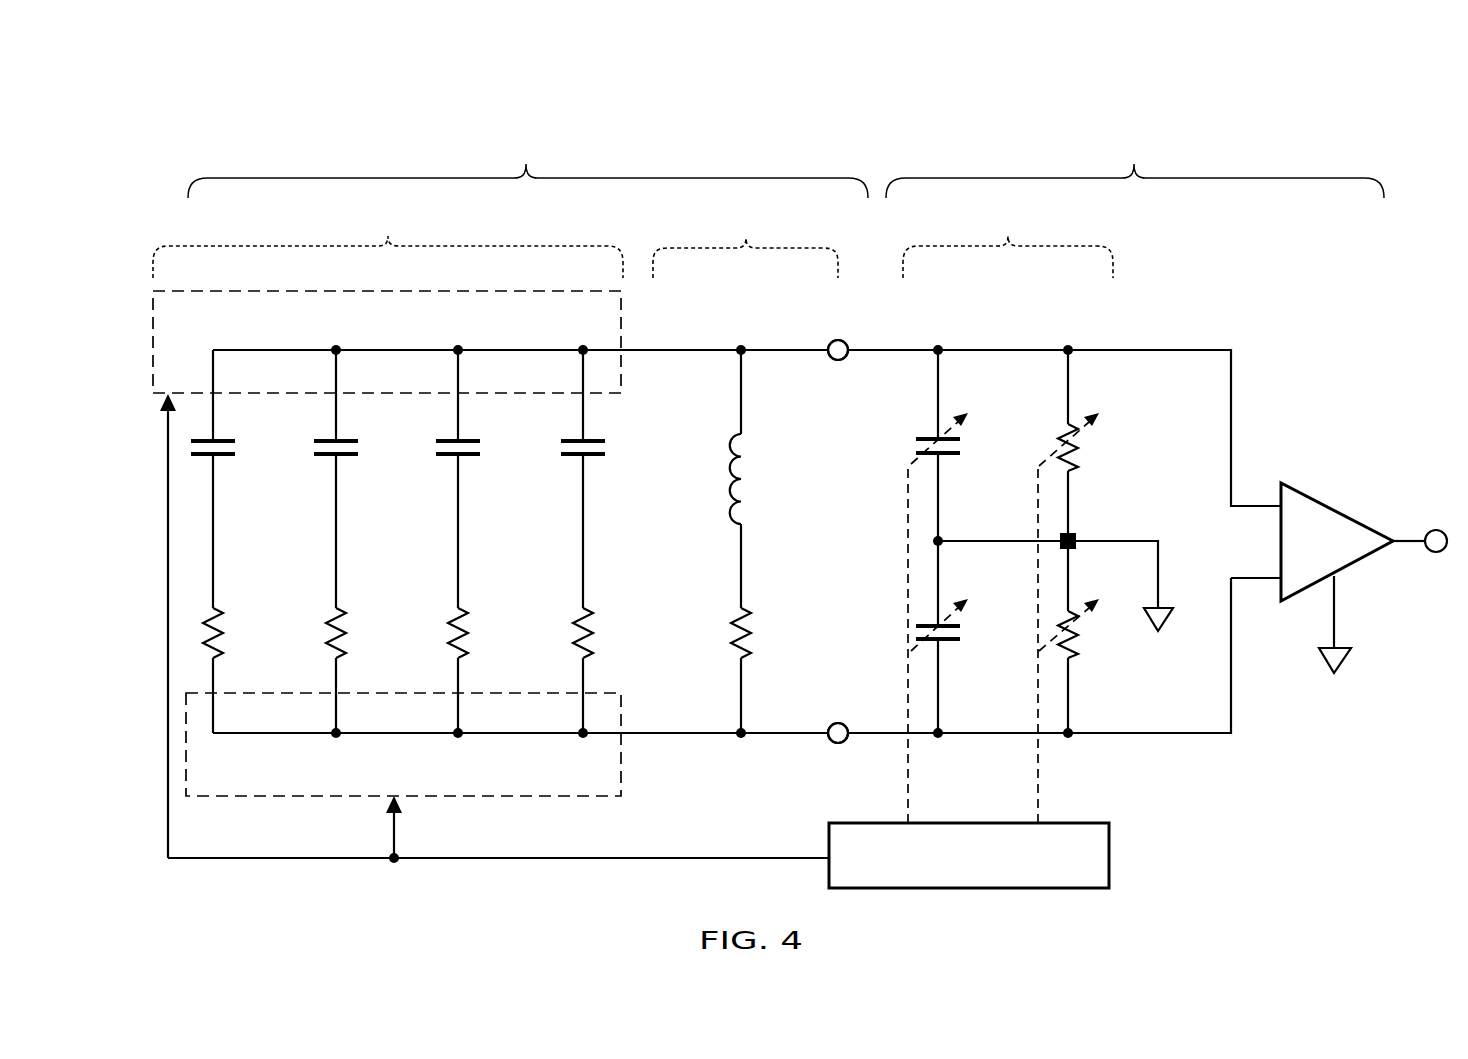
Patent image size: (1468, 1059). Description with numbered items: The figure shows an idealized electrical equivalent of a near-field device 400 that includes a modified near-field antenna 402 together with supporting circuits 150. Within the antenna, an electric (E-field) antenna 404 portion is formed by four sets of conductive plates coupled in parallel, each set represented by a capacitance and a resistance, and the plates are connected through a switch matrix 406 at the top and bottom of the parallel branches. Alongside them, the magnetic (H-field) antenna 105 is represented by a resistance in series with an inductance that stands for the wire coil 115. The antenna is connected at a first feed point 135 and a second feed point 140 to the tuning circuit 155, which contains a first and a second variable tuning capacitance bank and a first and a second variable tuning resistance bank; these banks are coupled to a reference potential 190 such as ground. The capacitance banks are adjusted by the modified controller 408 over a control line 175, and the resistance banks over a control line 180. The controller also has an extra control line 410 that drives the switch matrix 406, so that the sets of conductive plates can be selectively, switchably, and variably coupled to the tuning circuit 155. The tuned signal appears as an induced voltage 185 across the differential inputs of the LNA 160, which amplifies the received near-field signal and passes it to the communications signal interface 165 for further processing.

The near-field device 400 is at (176, 152).
The modified near-field antenna 402 is at (528, 164).
The electric (E-field) antenna 404 is at (388, 242).
The magnetic (H-field) antenna 105 is at (745, 241).
The supporting circuits 150 is at (1135, 164).
The tuning circuit 155 is at (1008, 242).
The switch matrix 406 is at (152, 350).
The first feed point 135 is at (837, 360).
The second feed point 140 is at (837, 720).
The wire coil 115 is at (751, 479).
The control line 175 is at (905, 548).
The control line 180 is at (1037, 490).
The induced voltage 185 is at (1212, 522).
The reference potential 190 is at (1160, 630).
The LNA 160 is at (1333, 505).
The communications signal interface 165 is at (1436, 527).
The modified controller 408 is at (1110, 855).
The control line 410 is at (167, 570).